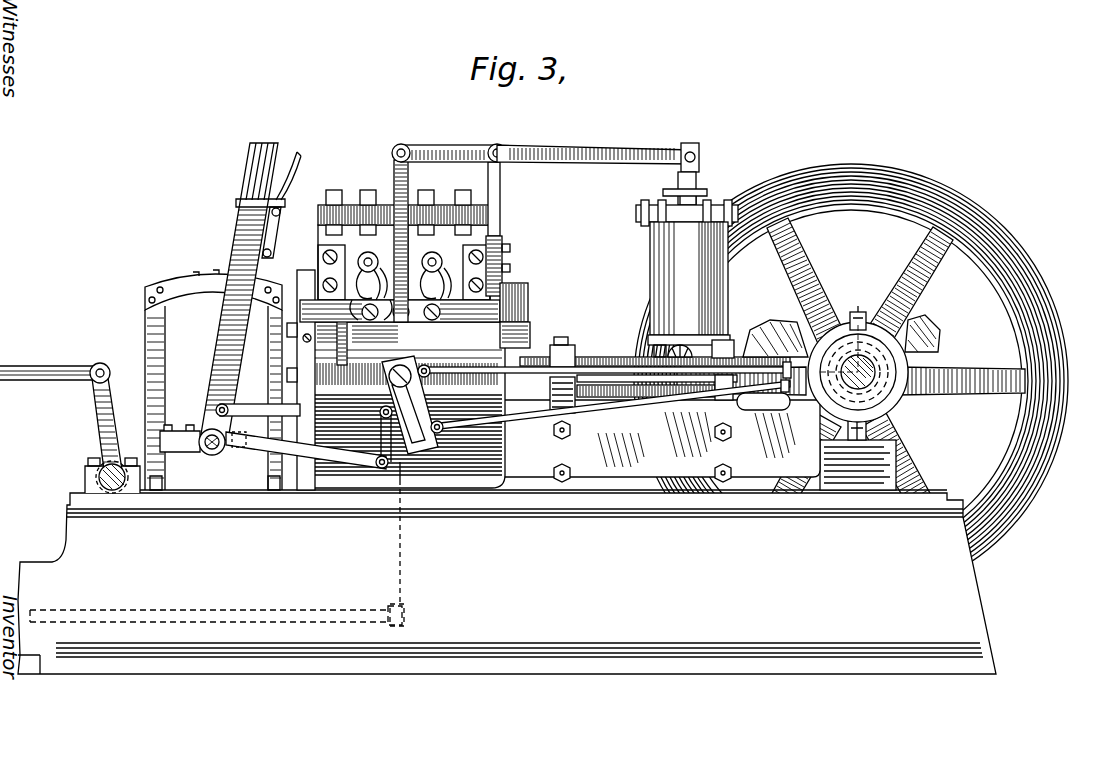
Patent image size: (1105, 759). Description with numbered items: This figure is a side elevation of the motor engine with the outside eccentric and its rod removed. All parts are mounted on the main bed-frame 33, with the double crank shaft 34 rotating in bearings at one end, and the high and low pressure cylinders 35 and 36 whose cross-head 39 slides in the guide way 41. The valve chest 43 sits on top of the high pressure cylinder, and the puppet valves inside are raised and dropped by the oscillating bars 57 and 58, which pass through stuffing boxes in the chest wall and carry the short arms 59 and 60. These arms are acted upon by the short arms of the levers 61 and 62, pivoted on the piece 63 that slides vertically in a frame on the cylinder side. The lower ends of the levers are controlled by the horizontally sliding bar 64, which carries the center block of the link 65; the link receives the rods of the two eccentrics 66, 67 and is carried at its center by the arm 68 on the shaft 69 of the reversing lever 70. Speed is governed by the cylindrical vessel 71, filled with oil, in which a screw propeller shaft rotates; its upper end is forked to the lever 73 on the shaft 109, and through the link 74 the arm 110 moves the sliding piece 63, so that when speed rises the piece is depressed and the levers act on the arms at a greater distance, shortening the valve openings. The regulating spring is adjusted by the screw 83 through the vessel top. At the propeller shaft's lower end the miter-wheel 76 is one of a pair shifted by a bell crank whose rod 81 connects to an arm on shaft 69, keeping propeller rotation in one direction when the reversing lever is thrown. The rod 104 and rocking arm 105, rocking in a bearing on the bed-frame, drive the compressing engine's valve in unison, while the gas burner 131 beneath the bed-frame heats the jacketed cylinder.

The main bed-frame 33 is at (507, 582).
The double crank shaft 34 is at (854, 433).
The high pressure cylinder 35 is at (532, 318).
The low pressure cylinder 36 is at (518, 290).
The cross-head 39 is at (698, 400).
The guide way 41 is at (606, 366).
The valve chest 43 is at (527, 232).
The bar 57 is at (470, 240).
The bar 58 is at (364, 258).
The short arm or lever 59 is at (428, 258).
The short arm or lever 60 is at (383, 270).
The lever 61 is at (423, 364).
The lever 62 is at (393, 366).
The sliding piece 63 is at (370, 306).
The horizontally sliding bar 64 is at (297, 380).
The link 65 is at (426, 456).
The eccentric 66 is at (900, 408).
The eccentric 67 is at (906, 368).
The arm 68 is at (306, 470).
The shaft 69 is at (205, 434).
The reversing lever 70 is at (256, 252).
The cylindrical vessel 71 is at (687, 267).
The lever 73 is at (590, 150).
The link 74 is at (397, 182).
The miter-wheel 76 is at (724, 342).
The rod 81 is at (220, 400).
The screw 83 is at (700, 203).
The rod 104 is at (46, 388).
The rocking arm 105 is at (96, 440).
The shaft 109 is at (499, 150).
The arm 110 is at (447, 150).
The gas burner 131 is at (398, 486).